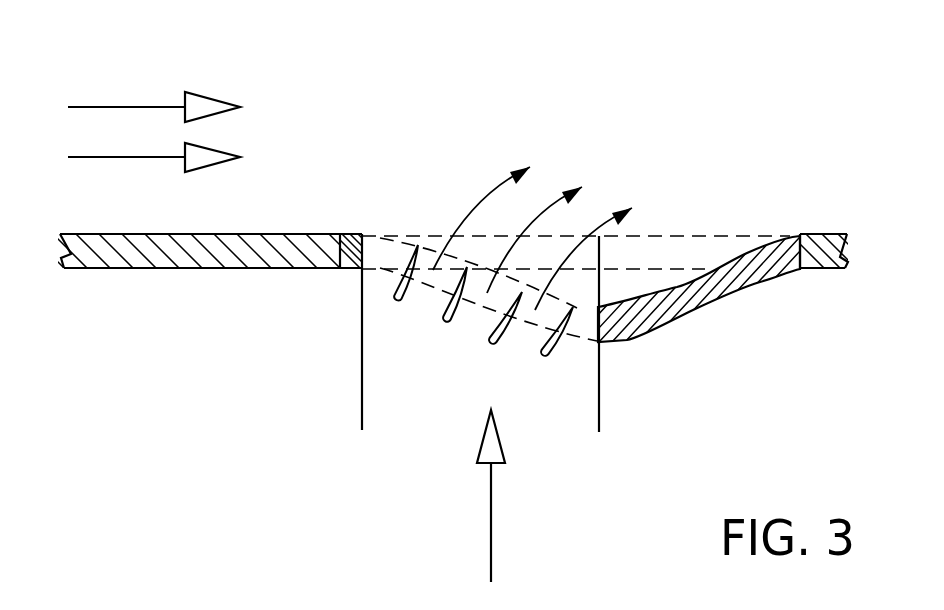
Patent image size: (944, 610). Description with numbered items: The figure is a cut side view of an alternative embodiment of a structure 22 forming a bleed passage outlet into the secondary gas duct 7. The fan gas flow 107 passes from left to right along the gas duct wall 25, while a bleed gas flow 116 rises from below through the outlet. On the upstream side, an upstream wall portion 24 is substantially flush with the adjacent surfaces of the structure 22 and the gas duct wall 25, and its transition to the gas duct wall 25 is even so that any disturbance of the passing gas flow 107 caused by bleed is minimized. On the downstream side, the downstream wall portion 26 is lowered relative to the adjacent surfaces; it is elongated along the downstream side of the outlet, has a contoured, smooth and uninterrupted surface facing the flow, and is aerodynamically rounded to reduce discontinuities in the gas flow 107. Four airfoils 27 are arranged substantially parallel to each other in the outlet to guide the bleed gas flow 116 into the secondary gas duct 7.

The gas flow 107 is at (128, 107).
The secondary gas duct 7 is at (454, 284).
The gas duct wall 25 is at (258, 234).
The upstream wall portion 24 is at (350, 240).
The structure 22 is at (603, 122).
The airfoils 27 is at (445, 317).
The downstream wall portion 26 is at (650, 330).
The bleed gas flow 116 is at (492, 523).